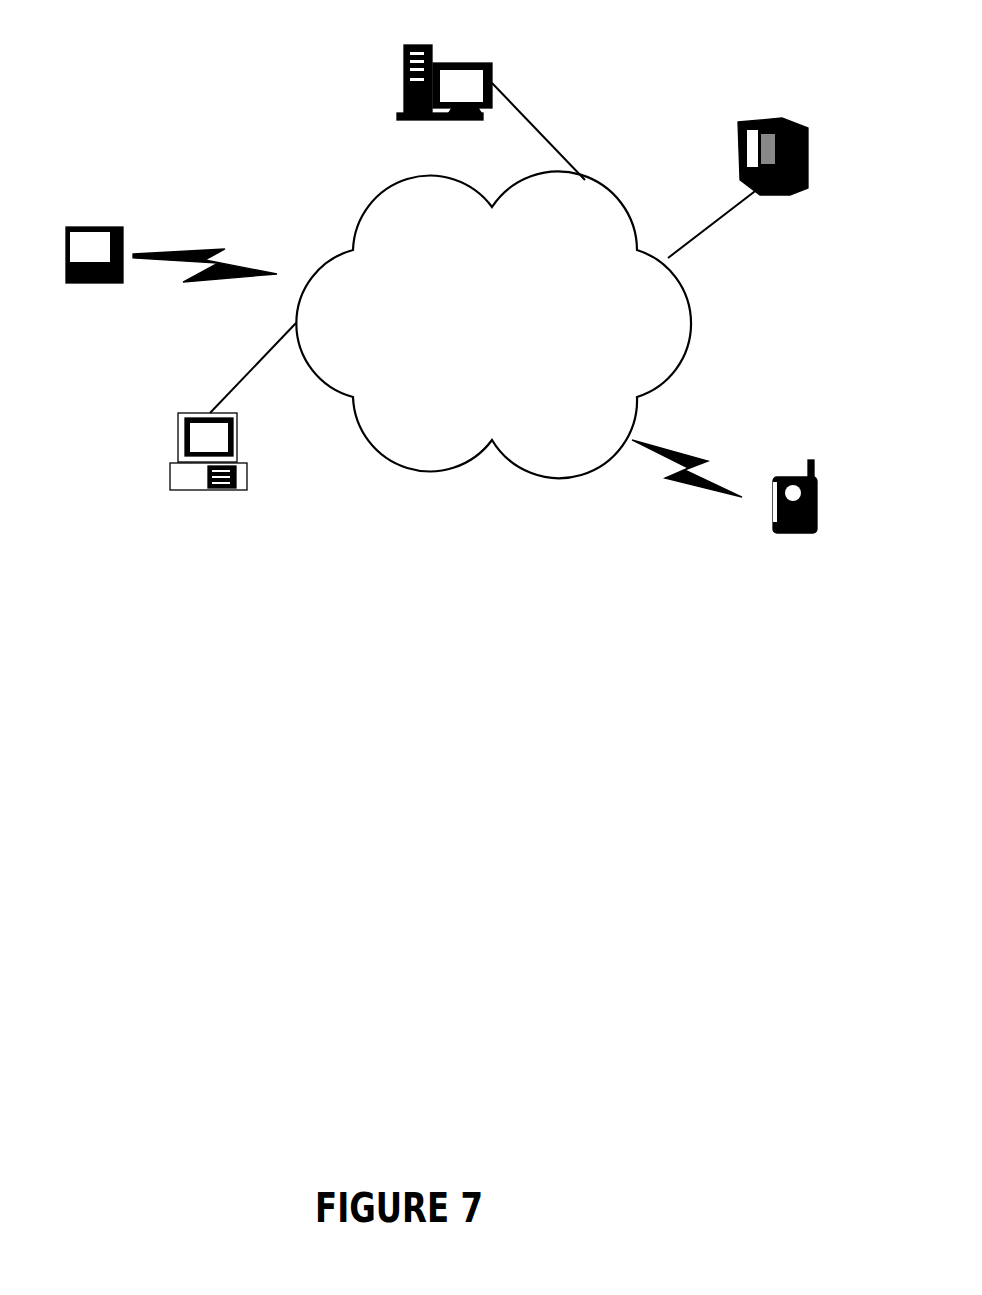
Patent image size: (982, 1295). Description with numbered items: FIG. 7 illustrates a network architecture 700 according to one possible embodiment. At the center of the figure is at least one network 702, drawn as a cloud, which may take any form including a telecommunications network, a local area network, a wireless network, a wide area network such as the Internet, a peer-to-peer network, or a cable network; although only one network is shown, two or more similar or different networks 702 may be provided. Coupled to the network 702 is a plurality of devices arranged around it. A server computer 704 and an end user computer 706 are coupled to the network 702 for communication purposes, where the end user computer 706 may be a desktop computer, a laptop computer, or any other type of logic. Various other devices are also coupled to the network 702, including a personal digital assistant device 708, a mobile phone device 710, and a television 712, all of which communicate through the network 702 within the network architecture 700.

The network architecture 700 is at (400, 772).
The network 702 is at (551, 474).
The server computer 704 is at (405, 80).
The end user computer 706 is at (170, 468).
The personal digital assistant (PDA) device 708 is at (93, 228).
The mobile phone device 710 is at (770, 473).
The television 712 is at (750, 115).